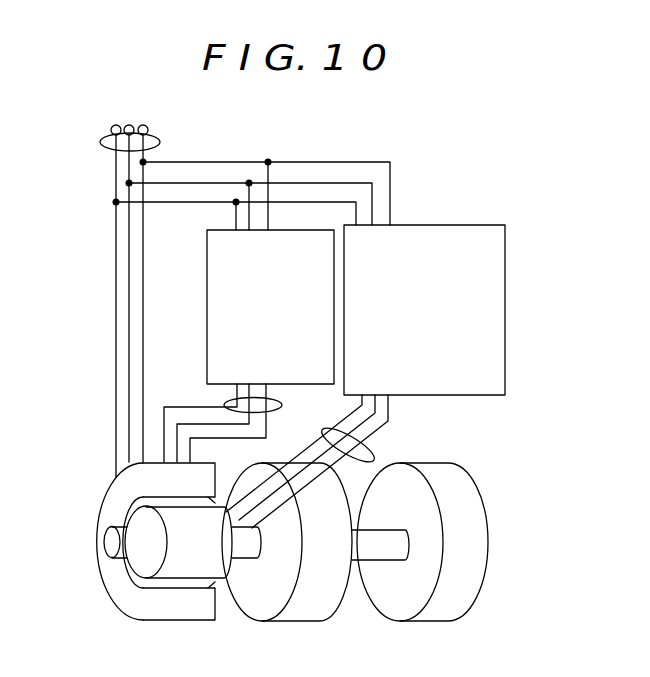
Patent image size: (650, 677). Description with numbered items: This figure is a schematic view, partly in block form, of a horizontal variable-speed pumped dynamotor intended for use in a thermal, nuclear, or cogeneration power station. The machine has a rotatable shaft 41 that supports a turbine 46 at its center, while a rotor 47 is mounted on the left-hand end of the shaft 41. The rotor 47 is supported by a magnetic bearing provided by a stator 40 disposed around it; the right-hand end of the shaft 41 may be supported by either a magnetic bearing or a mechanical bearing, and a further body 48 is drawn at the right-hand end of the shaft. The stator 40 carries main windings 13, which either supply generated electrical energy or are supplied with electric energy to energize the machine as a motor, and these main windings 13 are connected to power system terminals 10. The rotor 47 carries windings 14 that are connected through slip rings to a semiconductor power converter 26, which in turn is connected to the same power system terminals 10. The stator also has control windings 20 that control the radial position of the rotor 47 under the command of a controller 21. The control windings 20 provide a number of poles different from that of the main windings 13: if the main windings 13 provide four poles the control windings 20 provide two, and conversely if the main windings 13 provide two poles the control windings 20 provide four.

The power system terminals 10 is at (125, 117).
The main windings 13 is at (117, 435).
The windings 14 is at (340, 461).
The control windings 20 is at (183, 407).
The controller 21 is at (207, 290).
The semiconductor power converter 26 is at (505, 307).
The stator 40 is at (165, 620).
The rotatable shaft 41 is at (108, 552).
The turbine 46 is at (297, 620).
The rotor 47 is at (130, 516).
The load 48 is at (488, 560).